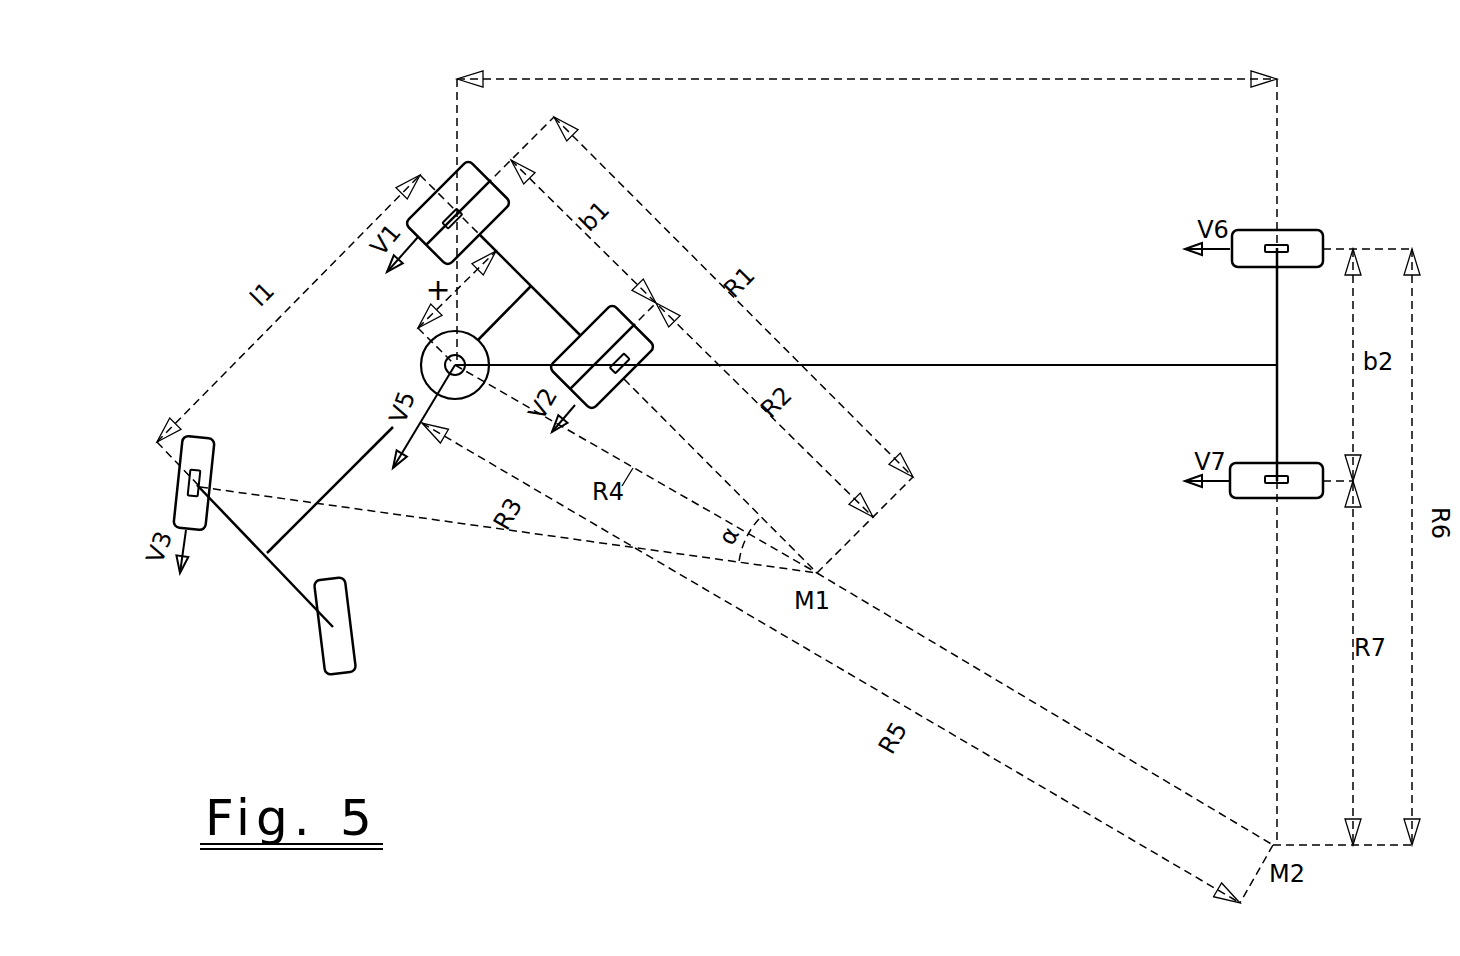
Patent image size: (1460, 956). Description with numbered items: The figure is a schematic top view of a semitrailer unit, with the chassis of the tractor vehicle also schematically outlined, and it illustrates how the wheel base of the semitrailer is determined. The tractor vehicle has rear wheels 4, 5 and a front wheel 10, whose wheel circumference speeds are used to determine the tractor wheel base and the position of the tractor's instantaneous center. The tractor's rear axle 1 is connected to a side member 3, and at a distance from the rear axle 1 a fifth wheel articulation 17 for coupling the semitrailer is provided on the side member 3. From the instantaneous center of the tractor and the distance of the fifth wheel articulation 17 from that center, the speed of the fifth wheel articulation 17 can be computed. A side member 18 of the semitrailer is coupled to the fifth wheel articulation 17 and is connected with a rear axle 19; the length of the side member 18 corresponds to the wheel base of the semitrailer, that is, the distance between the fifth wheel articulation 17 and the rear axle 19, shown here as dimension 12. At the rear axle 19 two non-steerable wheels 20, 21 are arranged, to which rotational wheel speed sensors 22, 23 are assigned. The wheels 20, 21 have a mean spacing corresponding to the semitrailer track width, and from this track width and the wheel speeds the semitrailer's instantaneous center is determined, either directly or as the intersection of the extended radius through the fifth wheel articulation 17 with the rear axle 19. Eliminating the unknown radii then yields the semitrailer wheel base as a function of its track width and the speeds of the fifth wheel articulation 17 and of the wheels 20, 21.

The rear axle 1 is at (500, 256).
The side member 3 is at (343, 477).
The rear wheel 4 is at (441, 152).
The rear wheel 5 is at (580, 288).
The front wheel 10 is at (205, 450).
The distance between axles 12 is at (867, 64).
The fifth wheel articulation 17 is at (421, 365).
The side member 18 is at (950, 363).
The rear axle 19 is at (1277, 308).
The non-steerable wheel 20 is at (1308, 245).
The non-steerable wheel 21 is at (1310, 494).
The rotational wheel speed sensor 22 is at (1272, 243).
The rotational wheel speed sensor 23 is at (1270, 487).